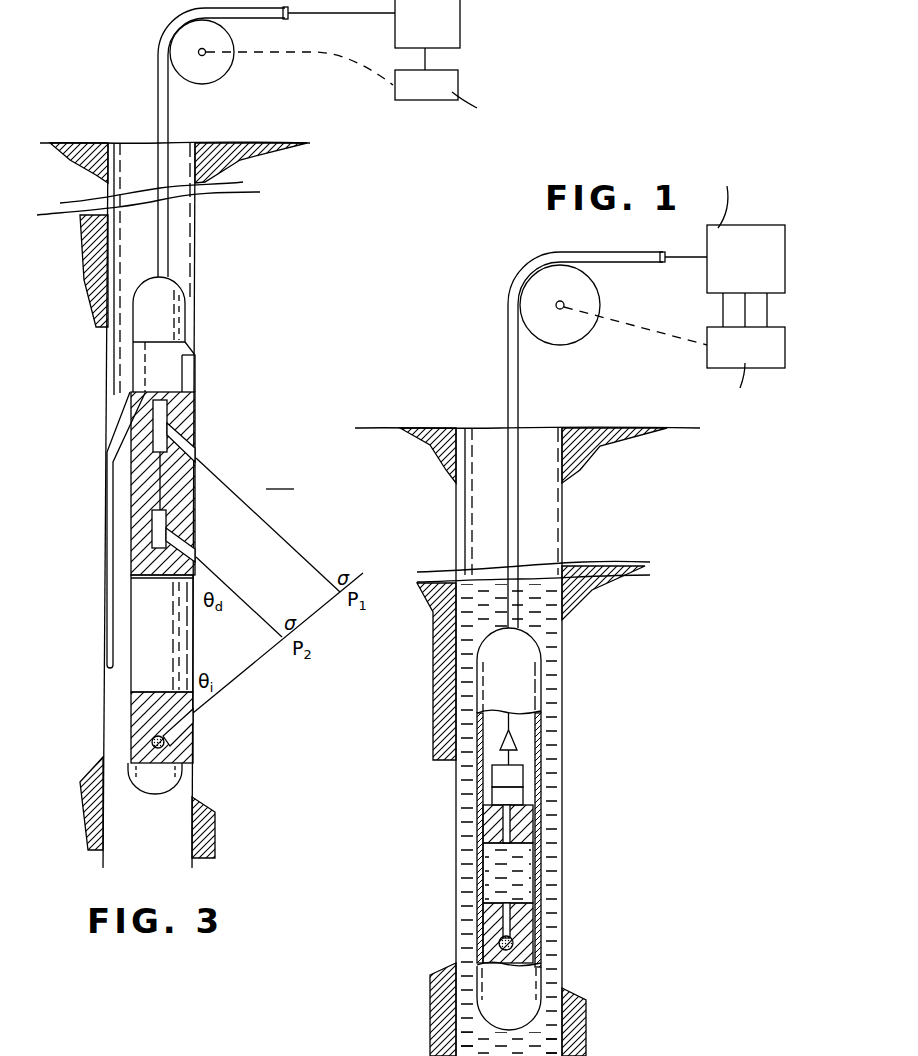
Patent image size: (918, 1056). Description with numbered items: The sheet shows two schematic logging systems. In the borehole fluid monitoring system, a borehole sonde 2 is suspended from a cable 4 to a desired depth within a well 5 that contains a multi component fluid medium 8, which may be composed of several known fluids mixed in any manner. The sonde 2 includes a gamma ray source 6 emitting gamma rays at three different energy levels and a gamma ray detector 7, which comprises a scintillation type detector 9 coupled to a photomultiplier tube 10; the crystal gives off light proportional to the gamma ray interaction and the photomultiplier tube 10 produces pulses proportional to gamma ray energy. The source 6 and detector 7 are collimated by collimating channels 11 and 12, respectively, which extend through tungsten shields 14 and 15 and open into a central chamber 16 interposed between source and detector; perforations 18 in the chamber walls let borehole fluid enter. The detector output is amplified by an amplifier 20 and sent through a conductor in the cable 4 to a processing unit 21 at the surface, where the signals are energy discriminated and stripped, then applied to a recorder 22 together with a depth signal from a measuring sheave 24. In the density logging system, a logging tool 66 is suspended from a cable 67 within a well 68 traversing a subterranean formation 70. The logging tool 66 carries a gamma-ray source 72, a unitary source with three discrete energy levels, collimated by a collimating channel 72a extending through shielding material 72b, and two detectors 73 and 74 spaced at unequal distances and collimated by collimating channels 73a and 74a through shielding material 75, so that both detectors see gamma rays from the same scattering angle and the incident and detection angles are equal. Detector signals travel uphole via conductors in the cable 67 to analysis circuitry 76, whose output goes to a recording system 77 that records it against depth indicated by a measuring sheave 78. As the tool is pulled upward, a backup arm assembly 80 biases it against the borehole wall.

In FIG. 1, the borehole sonde 2 is at (542, 768).
In FIG. 1, the cable 4 is at (518, 490).
In FIG. 1, the well 5 is at (563, 903).
In FIG. 1, the gamma ray source 6 is at (515, 943).
In FIG. 1, the gamma ray detector 7 is at (566, 777).
In FIG. 1, the multi component fluid medium 8 is at (553, 630).
In FIG. 1, the scintillation type detector 9 is at (492, 795).
In FIG. 1, the photomultiplier tube 10 is at (492, 768).
In FIG. 1, the collimating channel 11 is at (497, 927).
In FIG. 1, the collimating channel 12 is at (503, 827).
In FIG. 1, the shield 14 is at (525, 920).
In FIG. 1, the shield 15 is at (525, 832).
In FIG. 1, the central chamber 16 is at (480, 853).
In FIG. 1, the perforations 18 is at (537, 862).
In FIG. 1, the amplifier 20 is at (517, 737).
In FIG. 1, the processing unit 21 is at (738, 225).
In FIG. 1, the recorder 22 is at (707, 363).
In FIG. 1, the measuring sheave 24 is at (558, 347).
In FIG. 3, the logging tool 66 is at (192, 323).
In FIG. 3, the cable 67 is at (157, 72).
In FIG. 3, the well 68 is at (200, 238).
In FIG. 3, the subterranean formation 70 is at (165, 593).
In FIG. 3, the gamma-ray source 72 is at (152, 741).
In FIG. 3, the collimating channel 72a is at (182, 727).
In FIG. 3, the shielding material 72b is at (131, 720).
In FIG. 3, the detector 73 is at (152, 537).
In FIG. 3, the collimating channel 73a is at (196, 556).
In FIG. 3, the detector 74 is at (153, 412).
In FIG. 3, the collimating channel 74a is at (196, 458).
In FIG. 3, the shielding material 75 is at (196, 500).
In FIG. 3, the analysis circuitry 76 is at (462, 13).
In FIG. 3, the recording system 77 is at (458, 83).
In FIG. 3, the measuring sheave 78 is at (233, 62).
In FIG. 3, the backup arm assembly 80 is at (105, 505).